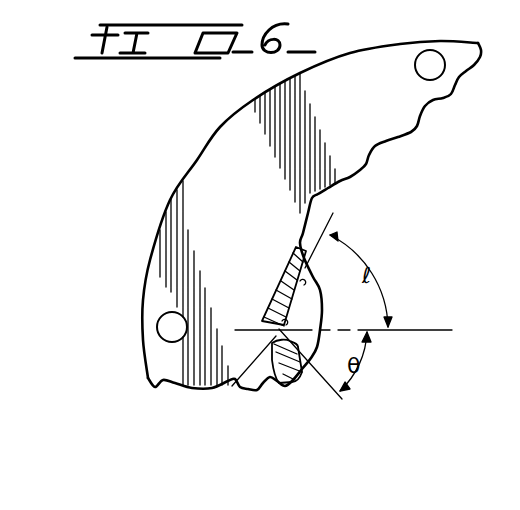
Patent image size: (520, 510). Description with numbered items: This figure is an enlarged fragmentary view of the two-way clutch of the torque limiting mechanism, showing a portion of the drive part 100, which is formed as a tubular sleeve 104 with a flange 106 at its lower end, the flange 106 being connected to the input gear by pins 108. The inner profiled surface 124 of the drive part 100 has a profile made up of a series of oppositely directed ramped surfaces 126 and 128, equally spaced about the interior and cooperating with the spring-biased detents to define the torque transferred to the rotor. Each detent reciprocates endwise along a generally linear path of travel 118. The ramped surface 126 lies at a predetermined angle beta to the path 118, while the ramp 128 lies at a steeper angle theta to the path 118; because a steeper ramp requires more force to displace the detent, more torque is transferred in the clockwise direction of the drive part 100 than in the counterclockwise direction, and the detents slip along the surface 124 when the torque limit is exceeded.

The drive part 100 is at (274, 377).
The tubular sleeve 104 is at (277, 292).
The flange 106 is at (205, 170).
The pins 108 is at (165, 324).
The linear path of travel 118 is at (430, 330).
The inner profiled surface 124 is at (268, 306).
The ramped surface 126 is at (296, 262).
The ramped surface 128 is at (236, 375).